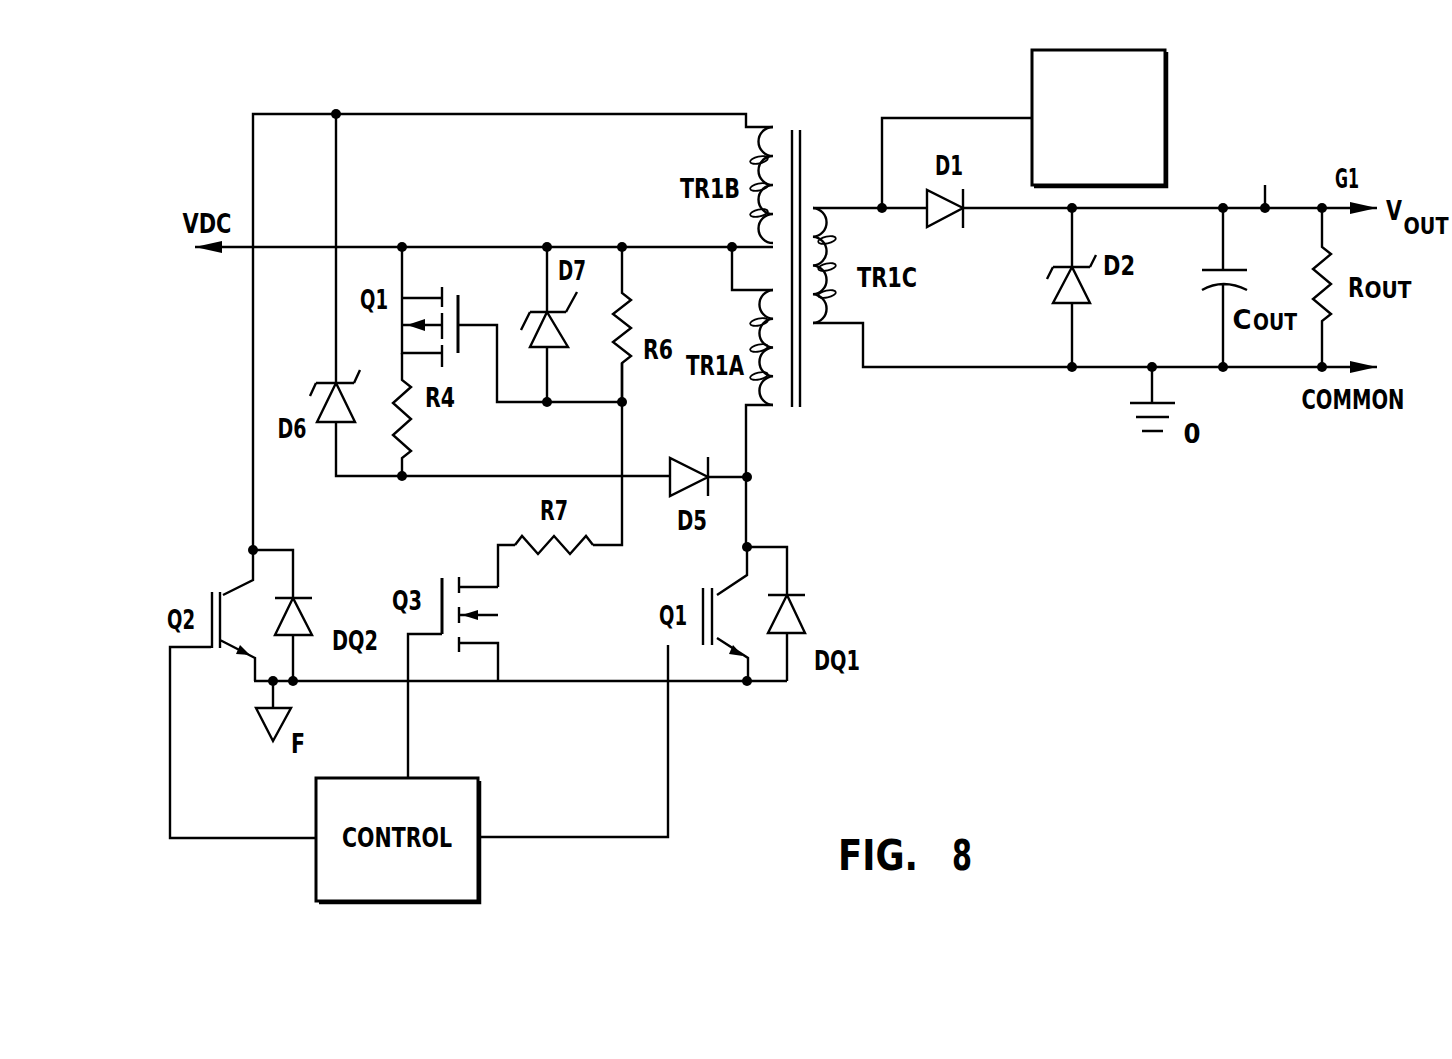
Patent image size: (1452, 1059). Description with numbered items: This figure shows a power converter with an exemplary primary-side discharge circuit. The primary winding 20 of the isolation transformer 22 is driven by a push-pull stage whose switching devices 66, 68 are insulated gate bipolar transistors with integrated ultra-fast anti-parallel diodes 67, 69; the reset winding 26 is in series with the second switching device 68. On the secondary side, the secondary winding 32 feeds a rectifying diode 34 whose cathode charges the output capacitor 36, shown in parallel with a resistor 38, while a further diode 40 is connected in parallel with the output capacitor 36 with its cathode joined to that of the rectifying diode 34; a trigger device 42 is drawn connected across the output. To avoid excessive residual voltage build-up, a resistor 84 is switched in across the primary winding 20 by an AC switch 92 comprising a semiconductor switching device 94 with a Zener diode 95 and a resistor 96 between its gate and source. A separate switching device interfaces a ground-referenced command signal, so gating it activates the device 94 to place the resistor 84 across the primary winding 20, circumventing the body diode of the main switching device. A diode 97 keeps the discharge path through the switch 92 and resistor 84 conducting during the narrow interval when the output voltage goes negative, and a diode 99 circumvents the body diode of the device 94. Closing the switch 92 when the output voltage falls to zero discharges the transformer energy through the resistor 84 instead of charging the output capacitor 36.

The primary winding 20 is at (760, 345).
The isolation transformer 22 is at (802, 137).
The secondary (or reset) winding 26 is at (773, 127).
The secondary winding 32 is at (817, 327).
The rectifying diode 34 is at (960, 220).
The output capacitor 36 is at (1208, 296).
The resistor 38 is at (1325, 254).
The diode 40 is at (1052, 297).
The trigger device 42 is at (1122, 168).
The switching device 66 is at (730, 653).
The anti-parallel diode 67 is at (798, 611).
The switching device 68 is at (211, 592).
The anti-parallel diode 69 is at (307, 613).
The resistor 84 is at (409, 423).
The AC switch 92 is at (521, 211).
The semiconductor switching device 94 is at (442, 287).
The Zener diode 95 is at (532, 312).
The resistor 96 is at (632, 291).
The diode 97 is at (696, 460).
The zener diode D6 99 is at (323, 406).